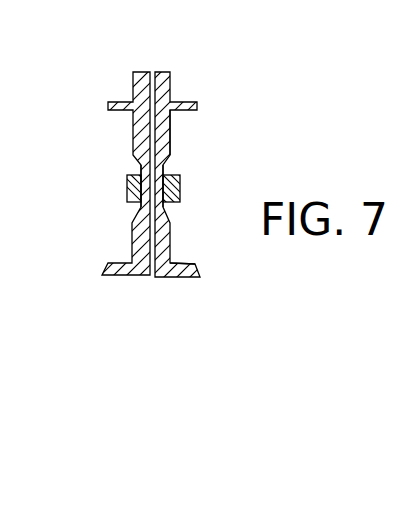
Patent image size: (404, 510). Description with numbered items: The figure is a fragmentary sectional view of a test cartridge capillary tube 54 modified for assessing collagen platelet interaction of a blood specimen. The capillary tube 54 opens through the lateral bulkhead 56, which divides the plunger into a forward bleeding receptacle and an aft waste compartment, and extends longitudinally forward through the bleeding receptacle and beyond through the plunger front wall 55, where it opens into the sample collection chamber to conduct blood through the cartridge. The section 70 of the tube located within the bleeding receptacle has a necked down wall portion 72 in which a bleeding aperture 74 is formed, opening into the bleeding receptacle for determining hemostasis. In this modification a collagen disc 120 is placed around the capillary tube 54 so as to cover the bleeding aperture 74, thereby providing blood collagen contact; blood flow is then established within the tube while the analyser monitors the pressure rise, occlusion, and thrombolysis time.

The capillary tube 54 is at (133, 84).
The plunger front wall 55 is at (190, 102).
The section of capillary tube 70 is at (171, 124).
The necked down wall portion 72 is at (141, 163).
The bleeding aperture 74 is at (166, 173).
The collagen disc 120 is at (119, 191).
The lateral bulkhead 56 is at (195, 264).